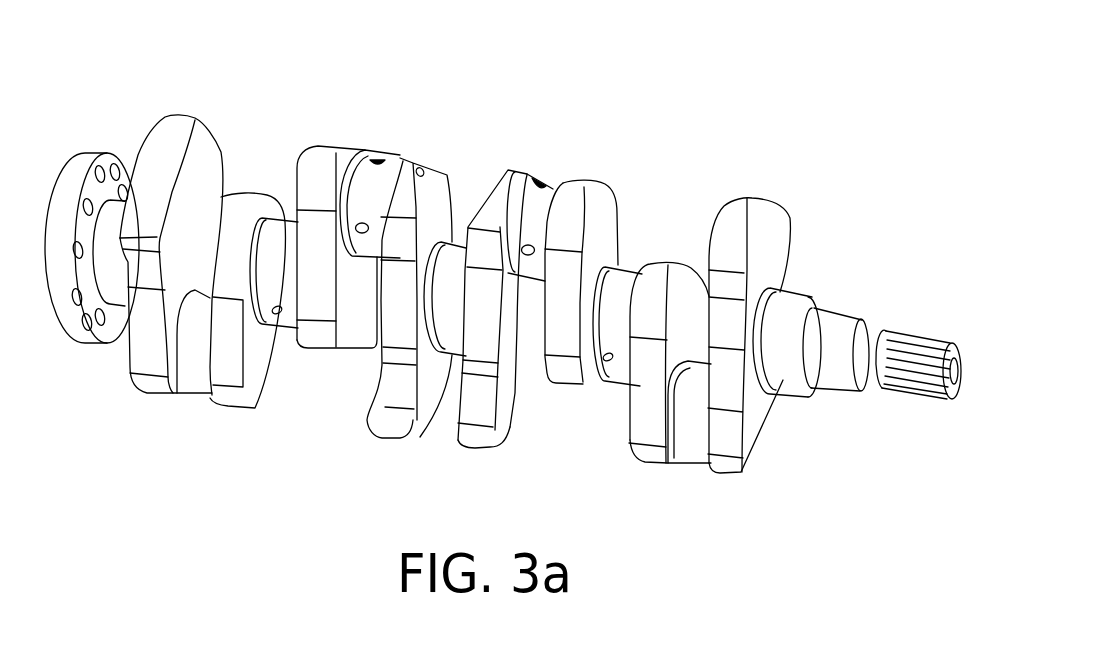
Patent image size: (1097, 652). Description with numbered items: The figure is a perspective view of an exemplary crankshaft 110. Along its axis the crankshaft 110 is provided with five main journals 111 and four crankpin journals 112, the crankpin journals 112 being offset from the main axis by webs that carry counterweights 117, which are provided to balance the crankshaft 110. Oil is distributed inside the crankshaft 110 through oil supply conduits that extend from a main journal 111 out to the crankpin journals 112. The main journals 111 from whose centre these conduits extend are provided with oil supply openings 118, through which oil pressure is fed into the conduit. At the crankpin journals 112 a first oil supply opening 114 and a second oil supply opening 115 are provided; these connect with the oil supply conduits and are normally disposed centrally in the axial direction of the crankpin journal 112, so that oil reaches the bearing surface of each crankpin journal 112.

The crankshaft 110 is at (503, 271).
The main journal 111 is at (113, 277).
The crankpin journal 112 is at (193, 360).
The first oil supply opening 114 is at (368, 224).
The second oil supply opening 115 is at (378, 160).
The counterweight 117 is at (171, 145).
The oil supply opening 118 is at (283, 315).